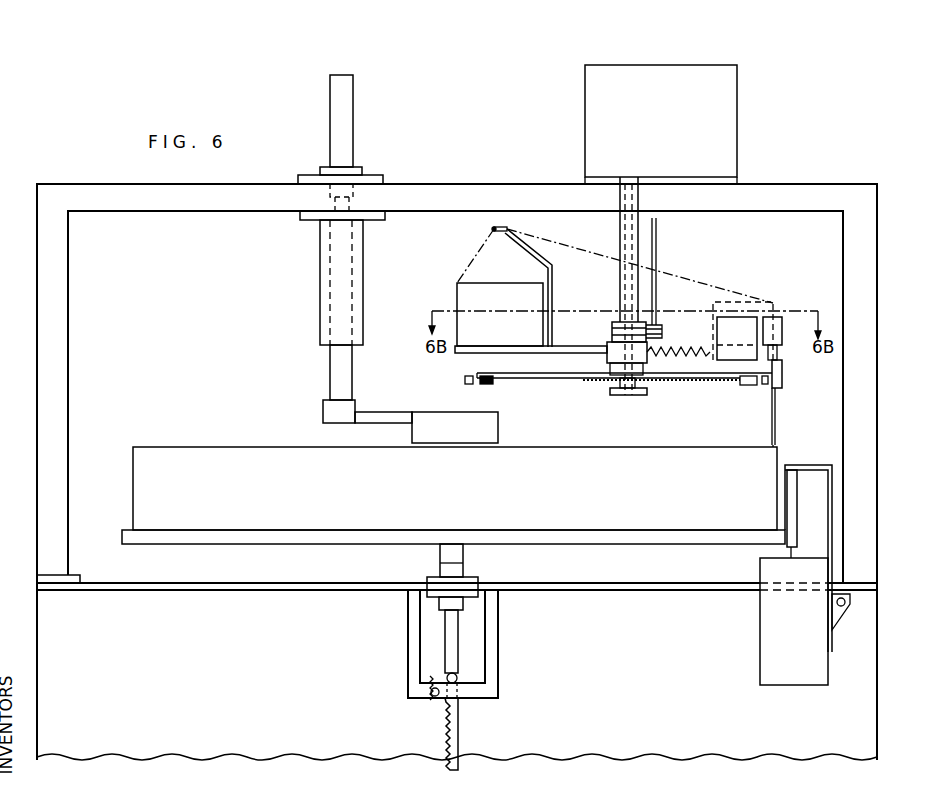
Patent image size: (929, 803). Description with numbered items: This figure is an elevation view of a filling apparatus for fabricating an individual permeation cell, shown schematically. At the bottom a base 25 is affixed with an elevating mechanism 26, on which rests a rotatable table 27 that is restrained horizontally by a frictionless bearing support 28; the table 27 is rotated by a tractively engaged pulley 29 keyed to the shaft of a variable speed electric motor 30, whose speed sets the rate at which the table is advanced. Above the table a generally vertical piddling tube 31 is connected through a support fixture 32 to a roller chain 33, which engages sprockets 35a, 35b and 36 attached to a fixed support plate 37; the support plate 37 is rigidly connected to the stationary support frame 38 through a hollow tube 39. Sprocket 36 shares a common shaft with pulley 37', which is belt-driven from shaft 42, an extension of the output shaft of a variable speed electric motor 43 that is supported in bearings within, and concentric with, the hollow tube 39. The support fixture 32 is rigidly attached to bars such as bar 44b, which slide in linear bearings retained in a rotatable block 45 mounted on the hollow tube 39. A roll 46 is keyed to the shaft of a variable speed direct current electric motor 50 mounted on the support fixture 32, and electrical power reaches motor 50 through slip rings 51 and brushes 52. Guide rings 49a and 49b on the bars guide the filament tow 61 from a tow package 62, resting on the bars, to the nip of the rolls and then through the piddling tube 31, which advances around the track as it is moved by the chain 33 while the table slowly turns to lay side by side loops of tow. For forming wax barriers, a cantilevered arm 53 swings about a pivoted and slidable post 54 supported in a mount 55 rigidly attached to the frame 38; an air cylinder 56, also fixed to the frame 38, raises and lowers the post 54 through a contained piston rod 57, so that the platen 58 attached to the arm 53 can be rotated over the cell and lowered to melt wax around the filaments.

The base 25 is at (868, 640).
The elevating mechanism 26 is at (498, 682).
The rotatable table 27 is at (505, 545).
The frictionless bearing support 28 is at (472, 585).
The pulley 29 is at (795, 487).
The variable speed electric motor 30 is at (760, 575).
The piddling tube 31 is at (775, 415).
The support fixture 32 is at (782, 372).
The roller chain 33 is at (765, 385).
The sprocket 35a is at (740, 382).
The sprocket 35b is at (493, 384).
The sprocket 36 is at (660, 383).
The support plate 37 is at (624, 391).
The pulley 37' is at (629, 400).
The stationary support frame 38 is at (720, 213).
The hollow tube 39 is at (620, 243).
The shaft 42 is at (625, 265).
The variable speed electric motor 43 is at (737, 125).
The bar 44b is at (565, 347).
The rotatable block 45 is at (647, 357).
The roll 46 is at (782, 328).
The guide ring 49a is at (775, 303).
The guide ring 49b is at (494, 229).
The variable speed direct current electric motor 50 is at (748, 312).
The slip rings 51 is at (646, 326).
The brushes 52 is at (662, 330).
The cantilevered arm 53 is at (388, 411).
The post 54 is at (352, 375).
The mount 55 is at (363, 297).
The air cylinder 56 is at (353, 133).
The piston rod 57 is at (383, 181).
The platen 58 is at (498, 423).
The filament tow 61 is at (715, 289).
The tow package 62 is at (459, 296).